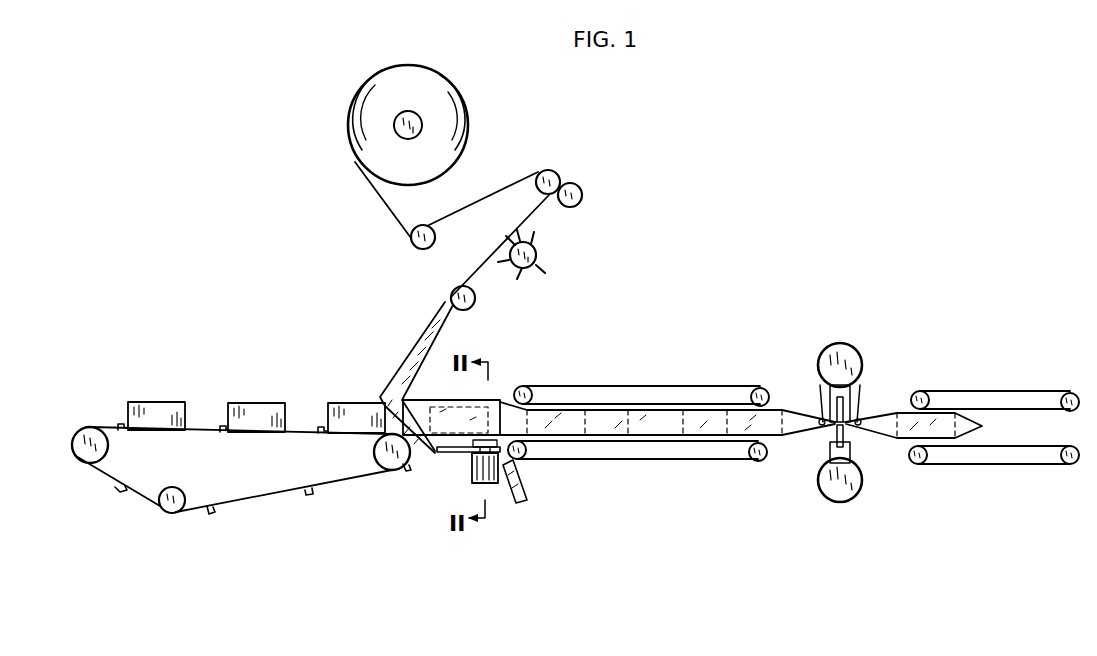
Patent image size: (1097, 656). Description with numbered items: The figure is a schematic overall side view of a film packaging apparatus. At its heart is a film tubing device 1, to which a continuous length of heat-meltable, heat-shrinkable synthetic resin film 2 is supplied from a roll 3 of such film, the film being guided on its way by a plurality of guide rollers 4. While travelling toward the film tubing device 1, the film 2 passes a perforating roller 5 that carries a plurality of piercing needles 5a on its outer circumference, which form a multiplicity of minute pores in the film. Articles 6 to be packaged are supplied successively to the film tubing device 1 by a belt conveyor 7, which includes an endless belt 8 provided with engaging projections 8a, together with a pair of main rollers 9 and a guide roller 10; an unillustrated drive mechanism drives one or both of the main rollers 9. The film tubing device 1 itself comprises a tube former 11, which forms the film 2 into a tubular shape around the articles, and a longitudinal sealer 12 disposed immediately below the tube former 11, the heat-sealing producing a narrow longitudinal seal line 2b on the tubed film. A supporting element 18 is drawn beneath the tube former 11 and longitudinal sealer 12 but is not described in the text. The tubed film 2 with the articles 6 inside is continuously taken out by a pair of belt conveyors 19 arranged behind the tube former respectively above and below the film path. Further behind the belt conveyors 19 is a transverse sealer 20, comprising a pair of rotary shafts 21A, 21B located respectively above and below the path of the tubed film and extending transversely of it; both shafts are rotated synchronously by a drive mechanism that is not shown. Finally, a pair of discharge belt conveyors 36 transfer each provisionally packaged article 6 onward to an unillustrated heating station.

The film tubing device 1 is at (427, 381).
The synthetic resin film 2 is at (500, 197).
The longitudinal seal line 2b is at (800, 440).
The roll 3 is at (437, 88).
The guide rollers 4 is at (578, 186).
The perforating roller 5 is at (537, 258).
The piercing needles 5a is at (538, 250).
The articles 6 is at (240, 402).
The belt conveyor 7 is at (100, 491).
The endless belt 8 is at (250, 498).
The engaging projections 8a is at (122, 420).
The main rollers 9 is at (82, 455).
The guide roller 10 is at (168, 512).
The tube former 11 is at (506, 390).
The longitudinal sealer 12 is at (512, 470).
The support plate 18 is at (448, 453).
The belt conveyors 19 is at (680, 385).
The transverse sealer 20 is at (874, 368).
The rotary shaft 21A is at (840, 353).
The rotary shaft 21B is at (832, 490).
The discharge belt conveyors 36 is at (1007, 390).